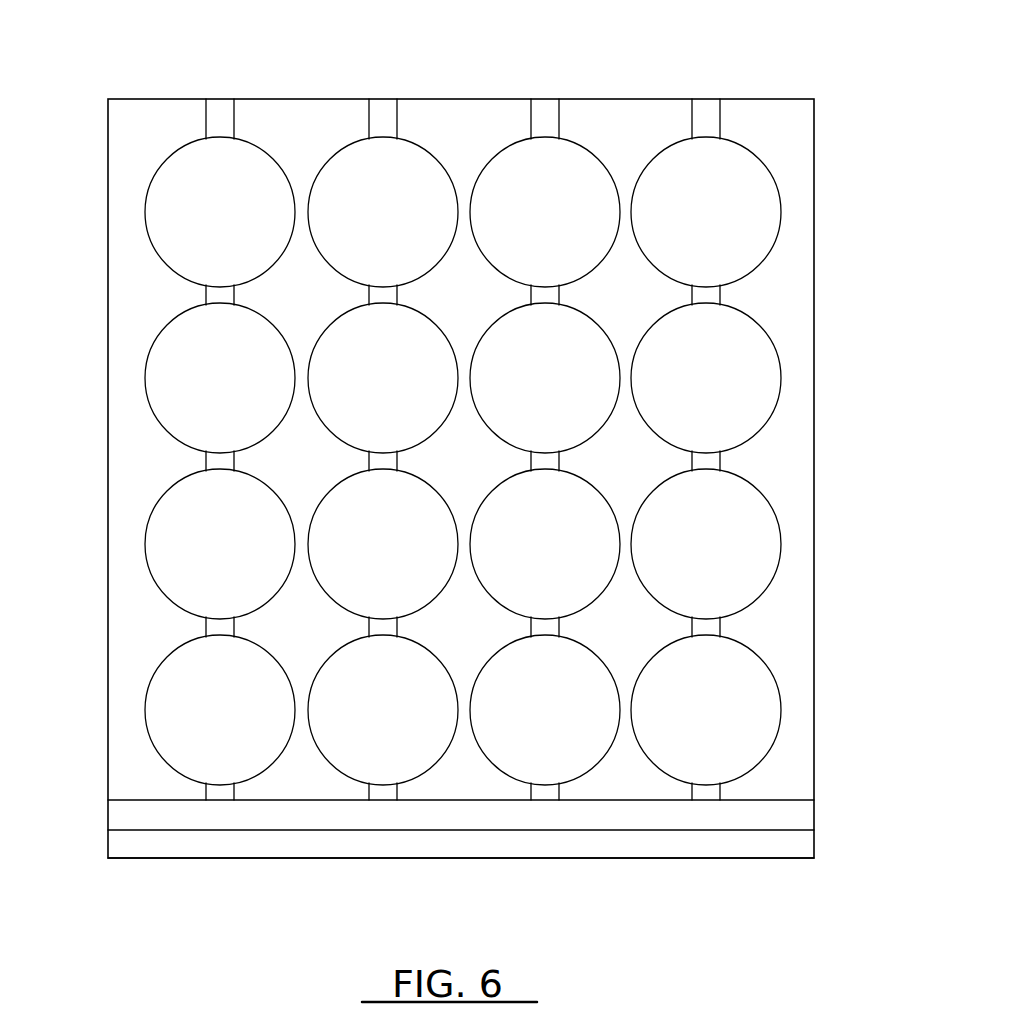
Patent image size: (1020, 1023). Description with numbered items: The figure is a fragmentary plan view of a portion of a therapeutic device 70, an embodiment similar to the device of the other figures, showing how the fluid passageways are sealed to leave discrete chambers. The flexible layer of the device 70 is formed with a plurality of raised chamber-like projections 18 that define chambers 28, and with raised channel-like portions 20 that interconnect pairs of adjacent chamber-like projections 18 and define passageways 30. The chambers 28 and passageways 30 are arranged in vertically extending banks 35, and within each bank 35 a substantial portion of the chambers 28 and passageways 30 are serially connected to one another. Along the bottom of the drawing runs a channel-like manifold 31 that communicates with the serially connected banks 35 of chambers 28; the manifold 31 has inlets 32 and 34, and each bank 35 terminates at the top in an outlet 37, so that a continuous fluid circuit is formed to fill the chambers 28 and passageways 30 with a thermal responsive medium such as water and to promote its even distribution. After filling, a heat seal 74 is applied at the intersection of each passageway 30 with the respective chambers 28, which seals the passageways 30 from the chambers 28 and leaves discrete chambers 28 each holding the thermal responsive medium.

The raised chamber-like projections 18 is at (148, 200).
The raised channel-like portions 20 is at (206, 118).
The chambers 28 is at (178, 232).
The passageways 30 is at (235, 115).
The manifold 31 is at (440, 828).
The inlet 32 is at (135, 800).
The inlet 34 is at (785, 832).
The banks 35 is at (352, 300).
The outlet 37 is at (220, 101).
The therapeutic device 70 is at (684, 932).
The heat seal 74 is at (228, 140).